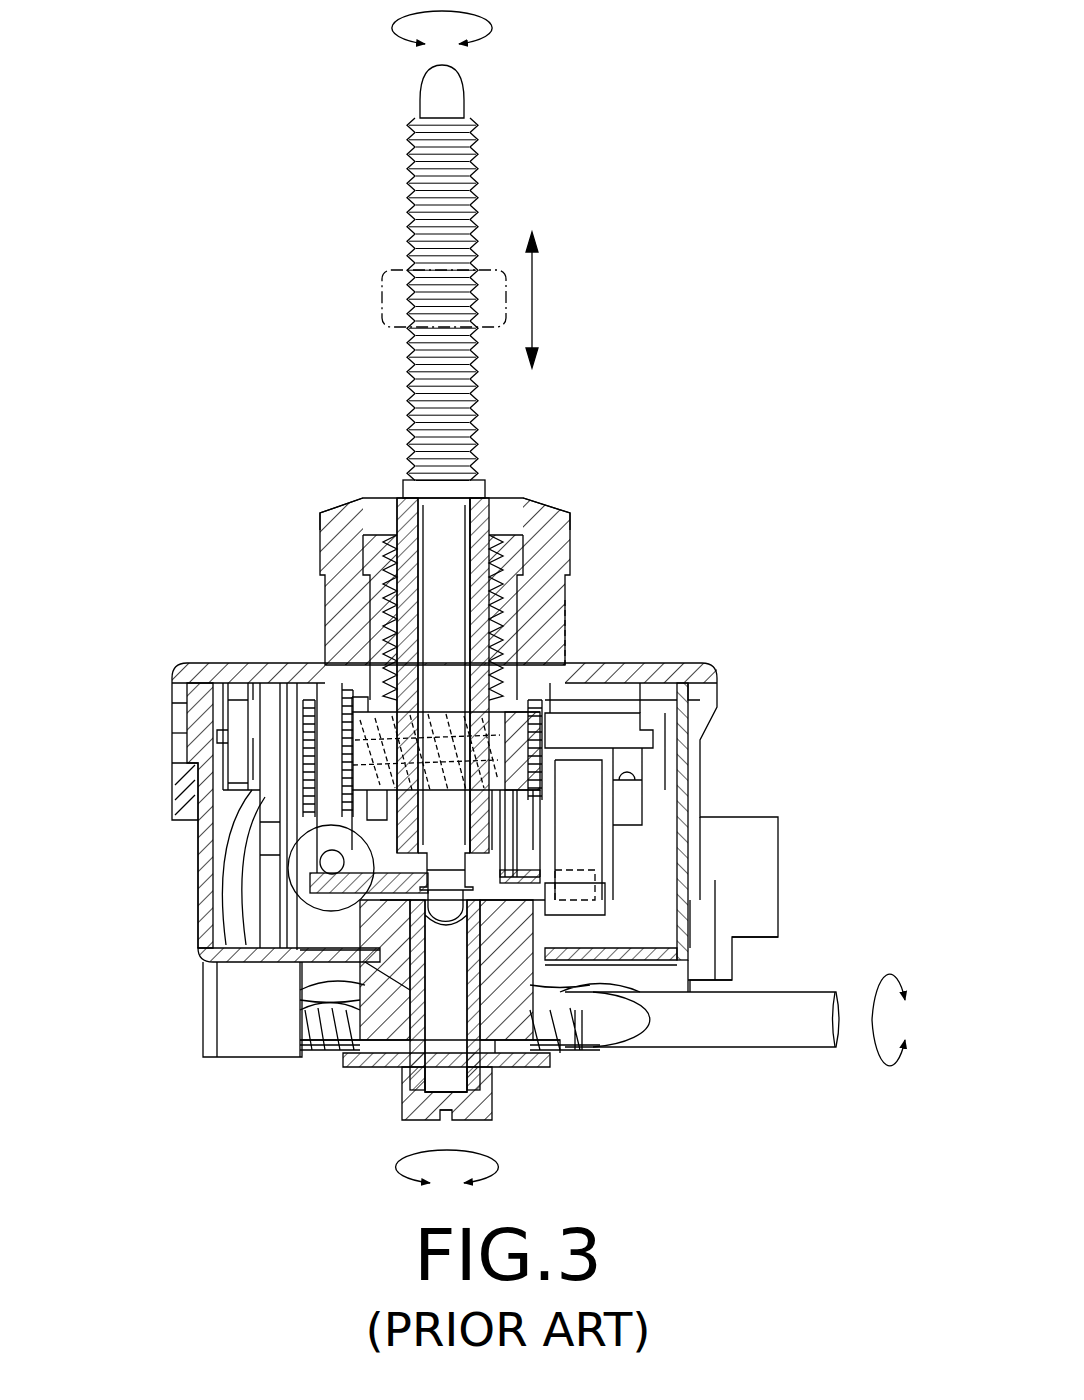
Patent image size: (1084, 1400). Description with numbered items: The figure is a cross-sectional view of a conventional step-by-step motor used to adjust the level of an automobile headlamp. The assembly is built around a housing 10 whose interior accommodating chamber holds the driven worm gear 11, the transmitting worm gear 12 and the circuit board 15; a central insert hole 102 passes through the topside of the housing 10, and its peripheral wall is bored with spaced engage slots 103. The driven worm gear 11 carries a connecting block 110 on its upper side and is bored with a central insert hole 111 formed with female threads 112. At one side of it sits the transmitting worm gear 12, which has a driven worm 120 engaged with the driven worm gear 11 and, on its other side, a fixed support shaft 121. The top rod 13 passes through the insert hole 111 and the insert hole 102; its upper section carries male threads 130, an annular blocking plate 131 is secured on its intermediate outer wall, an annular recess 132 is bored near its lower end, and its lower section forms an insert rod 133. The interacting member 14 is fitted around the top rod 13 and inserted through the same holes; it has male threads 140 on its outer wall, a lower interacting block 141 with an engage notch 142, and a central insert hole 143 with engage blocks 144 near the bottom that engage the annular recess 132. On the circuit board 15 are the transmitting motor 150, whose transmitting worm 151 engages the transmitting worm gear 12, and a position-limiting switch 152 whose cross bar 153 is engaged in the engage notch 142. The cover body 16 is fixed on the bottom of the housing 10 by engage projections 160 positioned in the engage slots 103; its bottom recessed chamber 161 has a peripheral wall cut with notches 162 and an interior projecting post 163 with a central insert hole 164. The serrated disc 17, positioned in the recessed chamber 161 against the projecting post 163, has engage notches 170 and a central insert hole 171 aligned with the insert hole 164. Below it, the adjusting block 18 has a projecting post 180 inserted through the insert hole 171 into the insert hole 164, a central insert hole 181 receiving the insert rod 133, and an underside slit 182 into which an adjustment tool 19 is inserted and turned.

The housing 10 is at (232, 668).
The driven worm gear 11 is at (600, 676).
The transmitting worm gear 12 is at (272, 800).
The top rod 13 is at (447, 548).
The interacting member 14 is at (402, 548).
The circuit board 15 is at (600, 735).
The cover body 16 is at (200, 925).
The serrated disc 17 is at (540, 1070).
The adjusting block 18 is at (428, 1105).
The adjustment tool 19 is at (790, 1015).
The central insert hole 102 is at (395, 520).
The engage slots 103 is at (200, 740).
The connecting block 110 is at (505, 598).
The central insert hole 111 is at (520, 553).
The female threads 112 is at (378, 636).
The driven worm 120 is at (540, 640).
The support shaft 121 is at (300, 770).
The male threads 130 is at (455, 392).
The annular blocking plate 131 is at (474, 490).
The annular recess 132 is at (452, 862).
The insert rod 133 is at (625, 975).
The male threads 140 is at (392, 672).
The interacting block 141 is at (560, 884).
The engage notch 142 is at (720, 936).
The central insert hole 143 is at (417, 594).
The engage blocks 144 is at (355, 896).
The transmitting motor 150 is at (240, 868).
The transmitting worm 151 is at (300, 872).
The position-limiting switch 152 is at (590, 802).
The cross bar 153 is at (590, 905).
The engage projections 160 is at (193, 775).
The recessed chamber 161 is at (330, 1008).
The notches 162 is at (631, 995).
The projecting post 163 is at (565, 1055).
The central insert hole 164 is at (335, 1000).
The engage notches 170 is at (368, 1020).
The insert hole 171 is at (502, 1058).
The projecting post 180 is at (372, 1000).
The central insert hole 181 is at (442, 1072).
The slit 182 is at (446, 1116).